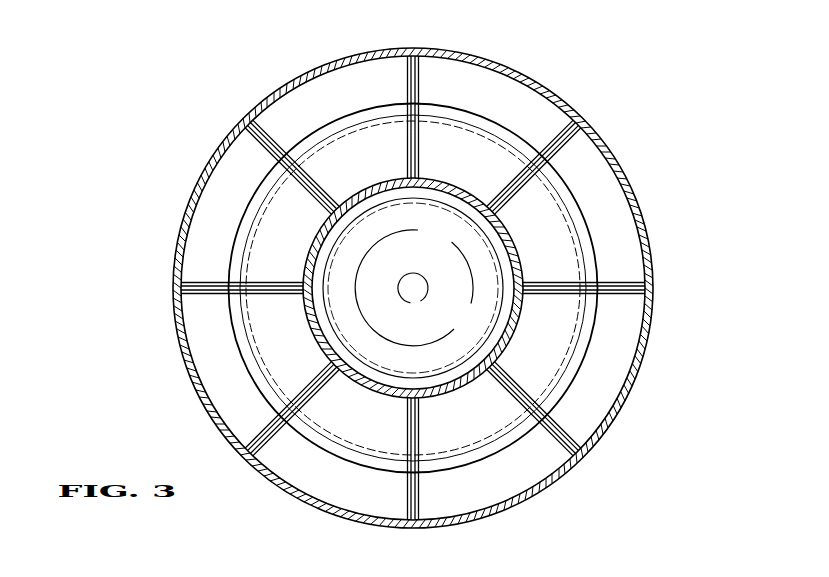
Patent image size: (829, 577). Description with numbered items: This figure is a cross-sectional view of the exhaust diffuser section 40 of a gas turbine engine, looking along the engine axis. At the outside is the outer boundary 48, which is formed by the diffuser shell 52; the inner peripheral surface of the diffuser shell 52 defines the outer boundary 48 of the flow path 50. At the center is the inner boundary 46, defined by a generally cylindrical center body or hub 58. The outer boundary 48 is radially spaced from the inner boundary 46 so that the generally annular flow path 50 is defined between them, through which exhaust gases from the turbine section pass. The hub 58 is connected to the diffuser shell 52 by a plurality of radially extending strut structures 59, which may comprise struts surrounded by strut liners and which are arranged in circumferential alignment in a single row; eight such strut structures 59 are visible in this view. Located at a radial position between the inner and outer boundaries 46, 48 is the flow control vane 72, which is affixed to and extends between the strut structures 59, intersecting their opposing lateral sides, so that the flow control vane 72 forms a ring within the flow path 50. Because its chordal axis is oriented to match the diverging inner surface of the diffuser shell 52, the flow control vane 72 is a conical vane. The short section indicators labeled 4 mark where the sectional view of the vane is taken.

The exhaust diffuser system 40 is at (672, 250).
The outer boundary 48 is at (290, 78).
The diffuser shell 52 is at (517, 72).
The flow control vane 72 is at (588, 212).
The flow path 50 is at (203, 245).
The strut structures 59 is at (404, 72).
The inner boundary 46 is at (384, 196).
The hub 58 is at (505, 235).
The section line for FIG. 4 is at (523, 130).